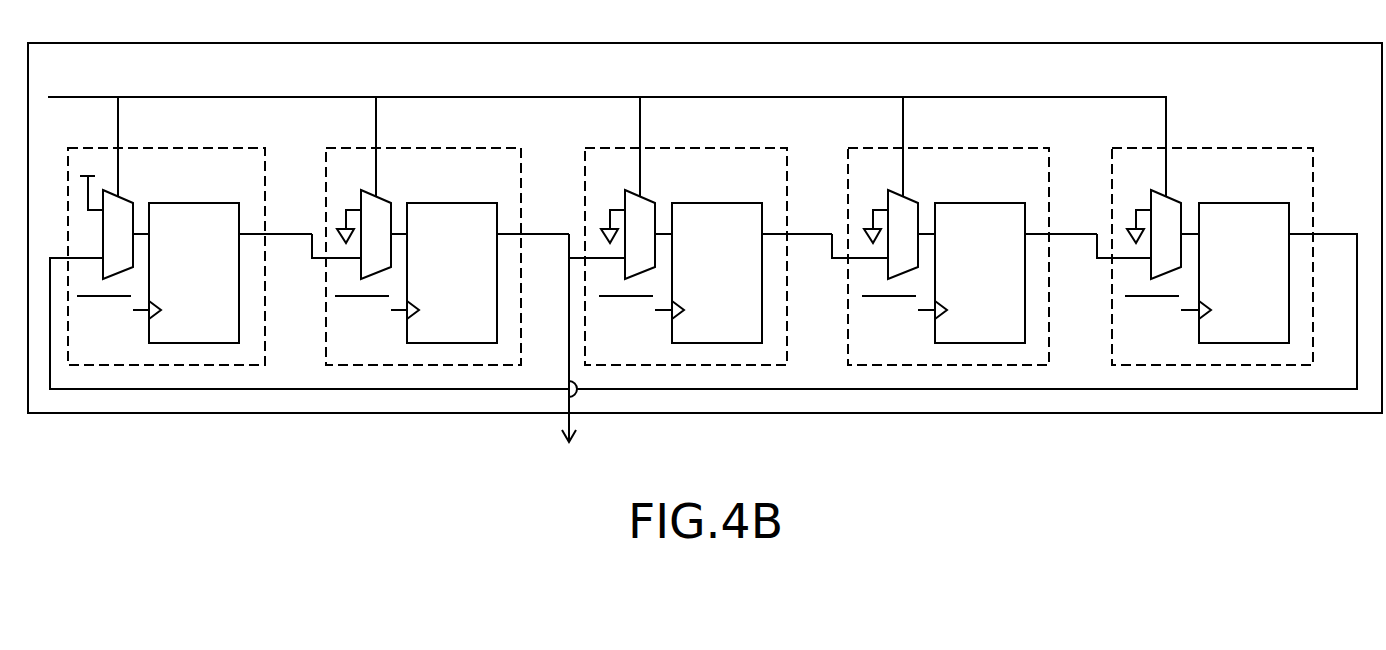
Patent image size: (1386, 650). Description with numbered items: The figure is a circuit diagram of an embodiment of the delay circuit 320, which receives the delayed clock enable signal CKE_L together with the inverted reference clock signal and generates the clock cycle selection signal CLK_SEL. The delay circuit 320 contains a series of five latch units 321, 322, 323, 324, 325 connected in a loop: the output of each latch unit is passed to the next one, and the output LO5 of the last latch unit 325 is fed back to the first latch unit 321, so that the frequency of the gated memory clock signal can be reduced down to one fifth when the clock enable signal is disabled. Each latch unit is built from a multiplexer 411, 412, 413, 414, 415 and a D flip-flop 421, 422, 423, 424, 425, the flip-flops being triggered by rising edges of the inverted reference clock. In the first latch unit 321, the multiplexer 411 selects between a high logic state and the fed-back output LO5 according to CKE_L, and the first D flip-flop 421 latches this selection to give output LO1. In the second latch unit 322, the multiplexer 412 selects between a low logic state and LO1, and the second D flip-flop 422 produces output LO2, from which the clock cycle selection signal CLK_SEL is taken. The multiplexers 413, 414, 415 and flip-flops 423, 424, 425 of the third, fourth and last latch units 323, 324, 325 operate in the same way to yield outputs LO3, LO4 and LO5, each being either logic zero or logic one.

The delay circuit 320 is at (1205, 43).
The first latch unit 321 is at (195, 148).
The second latch unit 322 is at (453, 148).
The third latch unit 323 is at (712, 148).
The fourth latch unit 324 is at (975, 148).
The last latch unit 325 is at (1239, 148).
The multiplexer 411 is at (120, 212).
The multiplexer 412 is at (378, 212).
The multiplexer 413 is at (642, 212).
The multiplexer 414 is at (905, 212).
The multiplexer 415 is at (1168, 212).
The first D flip-flop 421 is at (182, 212).
The second D flip-flop 422 is at (440, 212).
The D flip-flop 423 is at (705, 212).
The D flip-flop 424 is at (968, 212).
The D flip-flop 425 is at (1232, 212).